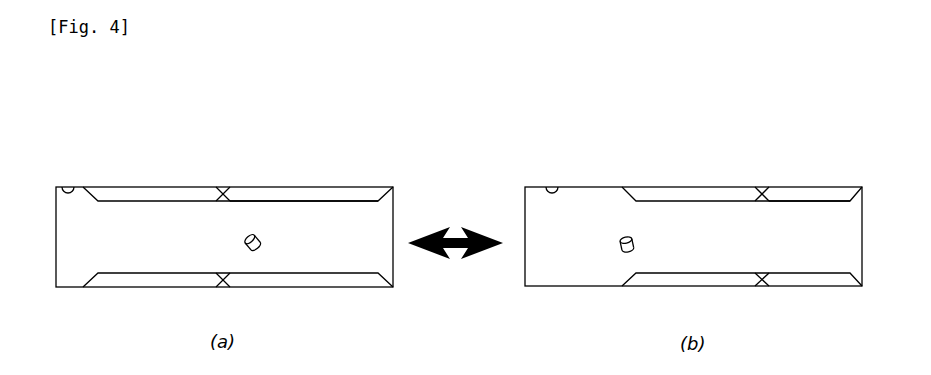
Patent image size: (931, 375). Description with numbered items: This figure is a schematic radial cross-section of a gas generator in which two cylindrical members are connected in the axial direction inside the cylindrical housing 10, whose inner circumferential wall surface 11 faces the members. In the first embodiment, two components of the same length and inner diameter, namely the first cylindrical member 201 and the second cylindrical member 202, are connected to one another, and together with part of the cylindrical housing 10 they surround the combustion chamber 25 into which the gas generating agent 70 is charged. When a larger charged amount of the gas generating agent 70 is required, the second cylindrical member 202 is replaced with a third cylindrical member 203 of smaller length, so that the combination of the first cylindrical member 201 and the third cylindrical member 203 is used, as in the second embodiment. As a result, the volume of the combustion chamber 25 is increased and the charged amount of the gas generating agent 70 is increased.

The cylindrical housing 10 is at (222, 186).
The inner circumferential wall surface 11 is at (67, 186).
The second combustion chamber 25 is at (105, 260).
The first cylindrical member 201 is at (165, 203).
The second cylindrical member 202 is at (318, 203).
The third cylindrical member 203 is at (812, 201).
The gas generating agent 70 is at (259, 252).